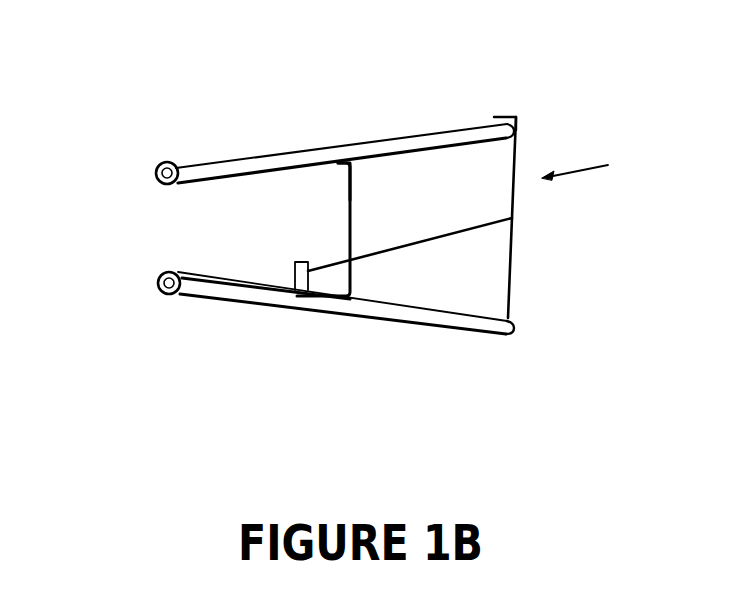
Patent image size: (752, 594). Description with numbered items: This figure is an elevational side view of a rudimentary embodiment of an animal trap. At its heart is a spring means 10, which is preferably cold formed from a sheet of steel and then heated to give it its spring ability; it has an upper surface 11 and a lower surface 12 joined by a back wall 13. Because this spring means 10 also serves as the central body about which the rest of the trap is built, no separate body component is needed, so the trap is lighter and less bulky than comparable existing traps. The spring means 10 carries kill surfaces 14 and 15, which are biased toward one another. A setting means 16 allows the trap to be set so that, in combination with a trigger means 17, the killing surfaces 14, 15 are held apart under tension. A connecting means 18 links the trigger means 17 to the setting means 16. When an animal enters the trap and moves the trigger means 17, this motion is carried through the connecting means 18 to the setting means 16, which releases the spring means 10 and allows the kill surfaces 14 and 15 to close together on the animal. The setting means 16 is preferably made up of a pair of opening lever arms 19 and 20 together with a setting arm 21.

The spring means 10 is at (356, 160).
The upper surface 11 is at (246, 169).
The lower surface 12 is at (232, 288).
The back wall 13 is at (353, 207).
The kill surface 14 is at (156, 163).
The kill surface 15 is at (157, 293).
The setting means 16 is at (593, 166).
The trigger means 17 is at (300, 281).
The connecting means 18 is at (423, 244).
The opening lever arm 19 is at (517, 115).
The opening lever arm 20 is at (480, 326).
The setting arm 21 is at (514, 297).